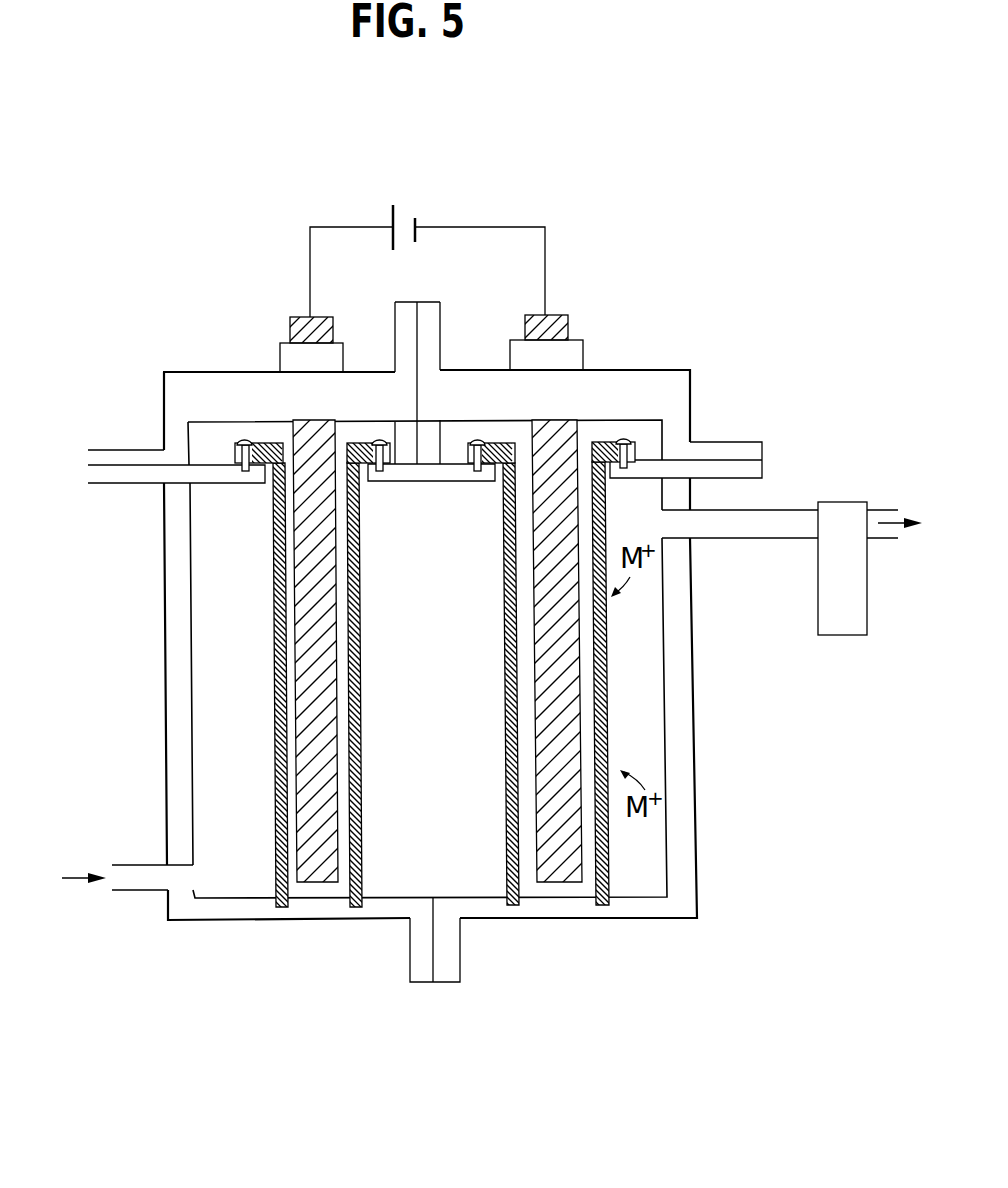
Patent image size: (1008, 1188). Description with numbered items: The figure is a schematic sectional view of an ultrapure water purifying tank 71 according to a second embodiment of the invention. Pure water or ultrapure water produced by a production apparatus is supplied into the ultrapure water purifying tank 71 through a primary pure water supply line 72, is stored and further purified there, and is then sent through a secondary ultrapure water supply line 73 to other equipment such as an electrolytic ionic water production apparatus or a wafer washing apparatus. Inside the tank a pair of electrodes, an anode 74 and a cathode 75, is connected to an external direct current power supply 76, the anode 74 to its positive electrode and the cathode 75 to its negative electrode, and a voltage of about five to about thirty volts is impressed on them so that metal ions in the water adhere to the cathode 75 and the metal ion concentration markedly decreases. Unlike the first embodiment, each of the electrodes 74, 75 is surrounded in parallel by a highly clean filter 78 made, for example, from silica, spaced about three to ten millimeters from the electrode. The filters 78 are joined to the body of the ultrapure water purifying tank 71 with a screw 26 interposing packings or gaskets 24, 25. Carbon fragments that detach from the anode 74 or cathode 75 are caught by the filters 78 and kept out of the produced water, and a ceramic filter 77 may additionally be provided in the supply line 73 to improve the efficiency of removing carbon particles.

The packing 24 is at (236, 468).
The gasket 25 is at (275, 893).
The screw 26 is at (376, 470).
The ultrapure water purifying tank 71 is at (257, 922).
The primary pure water supply line 72 is at (140, 885).
The secondary ultrapure water supply line 73 is at (870, 540).
The anode 74 is at (288, 327).
The cathode 75 is at (525, 327).
The D.C. power supply 76 is at (407, 213).
The filter 77 is at (842, 502).
The filter 78 is at (504, 642).